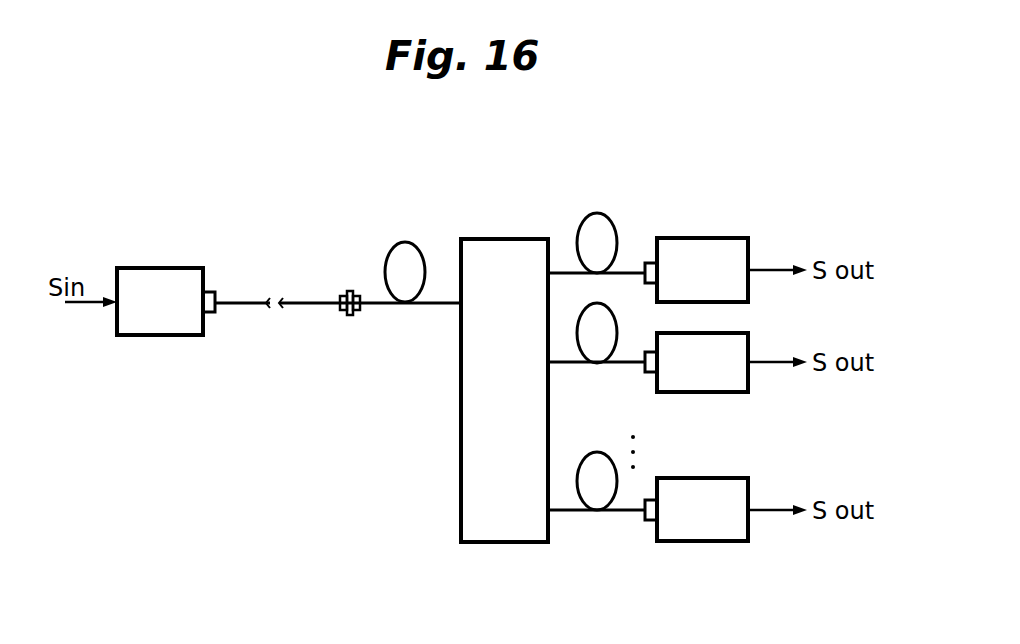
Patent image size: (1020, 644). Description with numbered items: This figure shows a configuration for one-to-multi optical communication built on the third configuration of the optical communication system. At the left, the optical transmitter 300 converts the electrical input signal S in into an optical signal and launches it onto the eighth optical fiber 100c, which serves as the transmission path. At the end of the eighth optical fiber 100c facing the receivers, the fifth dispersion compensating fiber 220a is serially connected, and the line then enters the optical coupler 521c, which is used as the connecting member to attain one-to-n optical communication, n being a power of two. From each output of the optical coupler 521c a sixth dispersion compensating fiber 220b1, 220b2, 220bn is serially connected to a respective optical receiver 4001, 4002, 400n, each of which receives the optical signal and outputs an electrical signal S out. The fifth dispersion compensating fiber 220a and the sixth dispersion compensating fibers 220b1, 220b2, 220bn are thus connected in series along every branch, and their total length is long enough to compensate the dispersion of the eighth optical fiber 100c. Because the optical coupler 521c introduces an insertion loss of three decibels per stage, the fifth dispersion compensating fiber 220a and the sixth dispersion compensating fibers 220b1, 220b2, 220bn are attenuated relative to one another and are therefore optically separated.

The optical transmitter 300 is at (168, 266).
The eighth optical fiber 100c is at (305, 300).
The fifth dispersion compensating fiber 220a is at (405, 241).
The optical coupler 521c is at (508, 238).
The sixth dispersion compensating fiber 220b1 is at (608, 214).
The sixth dispersion compensating fiber 220b2 is at (578, 363).
The sixth dispersion compensating fiber 220bn is at (580, 512).
The optical receiver 4001 is at (718, 238).
The optical receiver 4002 is at (700, 395).
The optical receiver 400n is at (700, 542).